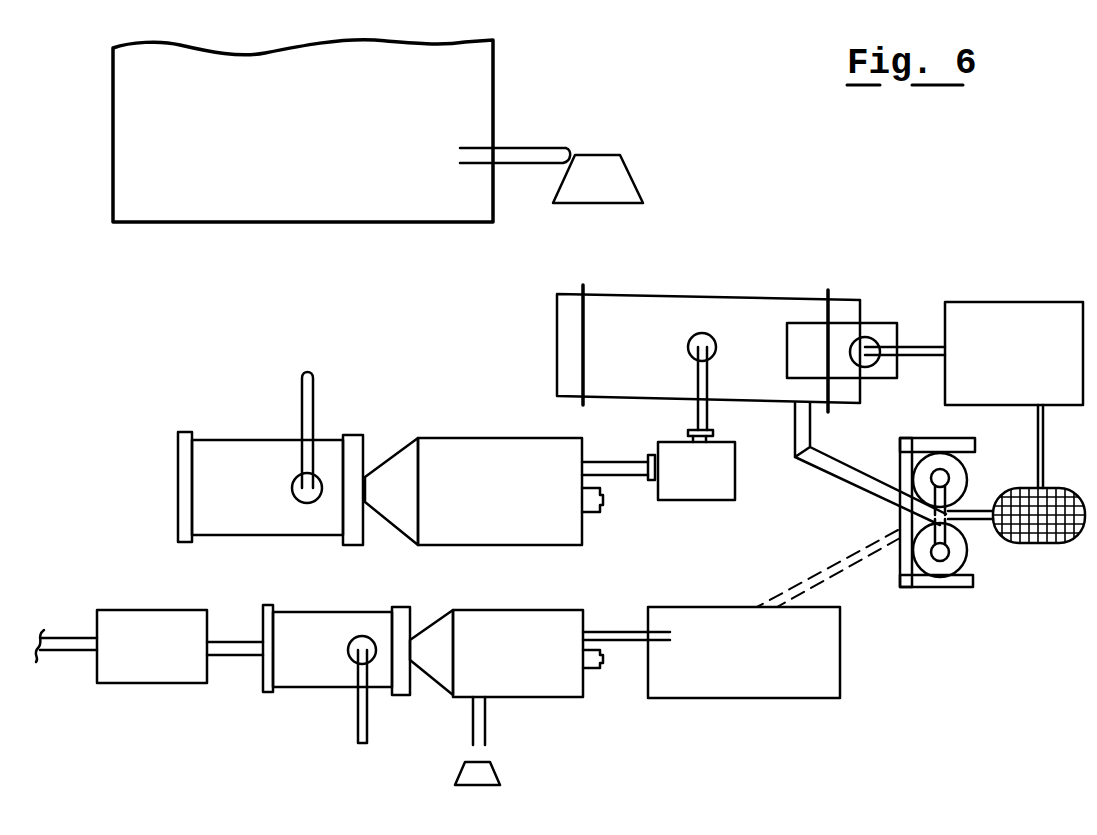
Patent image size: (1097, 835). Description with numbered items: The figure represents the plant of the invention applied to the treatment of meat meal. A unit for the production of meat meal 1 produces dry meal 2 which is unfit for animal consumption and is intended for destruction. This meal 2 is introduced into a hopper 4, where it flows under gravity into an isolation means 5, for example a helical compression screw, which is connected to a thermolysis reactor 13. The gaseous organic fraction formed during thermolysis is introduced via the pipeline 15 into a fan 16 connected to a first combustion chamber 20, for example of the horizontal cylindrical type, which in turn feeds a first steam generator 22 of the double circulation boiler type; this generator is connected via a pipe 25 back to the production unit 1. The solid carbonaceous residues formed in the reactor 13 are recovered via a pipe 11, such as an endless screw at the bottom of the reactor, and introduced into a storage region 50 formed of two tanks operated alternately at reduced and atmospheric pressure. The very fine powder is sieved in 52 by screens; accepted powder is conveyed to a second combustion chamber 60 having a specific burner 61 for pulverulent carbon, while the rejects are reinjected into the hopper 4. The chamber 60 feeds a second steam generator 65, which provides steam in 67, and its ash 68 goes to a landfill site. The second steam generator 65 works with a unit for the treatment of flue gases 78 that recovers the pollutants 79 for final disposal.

The unit for the production of meat meal 1 is at (467, 89).
The dry meal 2 is at (614, 172).
The hopper 4 is at (1046, 310).
The isolation means 5 is at (884, 323).
The pipe 11 is at (797, 442).
The thermolysis reactor 13 is at (745, 305).
The pipeline 15 is at (697, 336).
The fan 16 is at (705, 492).
The first combustion chamber 20 is at (507, 450).
The first steam generator 22 is at (228, 452).
The pipe 25 is at (315, 402).
The storage region 50 is at (955, 588).
The sieving means 52 is at (1072, 545).
The second combustion chamber 60 is at (553, 683).
The burner 61 is at (593, 672).
The second steam generator 65 is at (292, 677).
The steam outlet 67 is at (356, 730).
The ash 68 is at (485, 770).
The unit for the treatment of flue gases 78 is at (140, 667).
The pollutants 79 is at (70, 640).